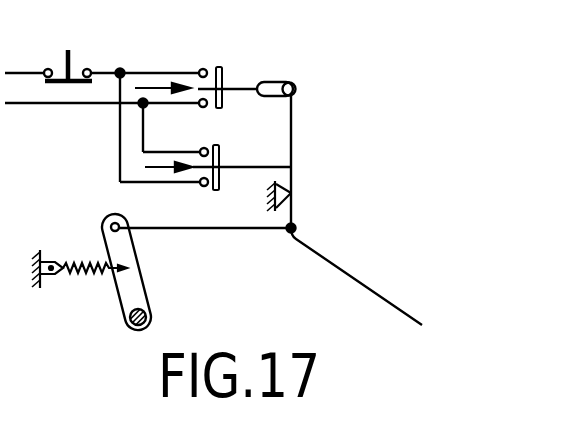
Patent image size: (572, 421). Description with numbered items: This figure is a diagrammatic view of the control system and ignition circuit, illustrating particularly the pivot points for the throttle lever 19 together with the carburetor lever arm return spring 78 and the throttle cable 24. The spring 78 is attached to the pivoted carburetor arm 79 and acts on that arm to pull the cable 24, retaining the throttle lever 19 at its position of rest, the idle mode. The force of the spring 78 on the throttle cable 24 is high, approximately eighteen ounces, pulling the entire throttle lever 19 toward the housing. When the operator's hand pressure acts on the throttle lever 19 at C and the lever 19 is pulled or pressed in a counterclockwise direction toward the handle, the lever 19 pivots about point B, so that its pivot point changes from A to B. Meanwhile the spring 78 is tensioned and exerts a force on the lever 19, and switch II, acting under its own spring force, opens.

The pivot point B is at (303, 82).
The pivot point A is at (302, 186).
The throttle lever 19 is at (342, 269).
The hand pressure point C is at (392, 318).
The throttle cable 24 is at (223, 229).
The carburetor lever arm return spring 78 is at (79, 262).
The carburetor arm 79 is at (132, 285).